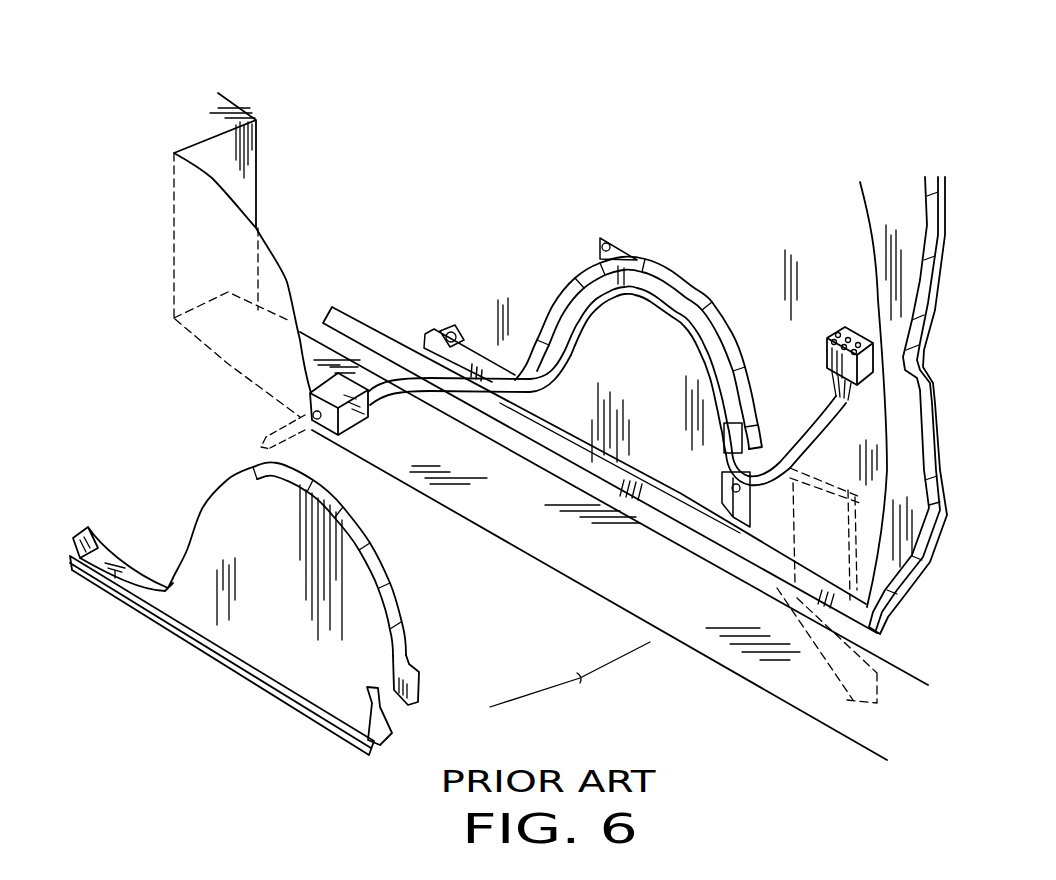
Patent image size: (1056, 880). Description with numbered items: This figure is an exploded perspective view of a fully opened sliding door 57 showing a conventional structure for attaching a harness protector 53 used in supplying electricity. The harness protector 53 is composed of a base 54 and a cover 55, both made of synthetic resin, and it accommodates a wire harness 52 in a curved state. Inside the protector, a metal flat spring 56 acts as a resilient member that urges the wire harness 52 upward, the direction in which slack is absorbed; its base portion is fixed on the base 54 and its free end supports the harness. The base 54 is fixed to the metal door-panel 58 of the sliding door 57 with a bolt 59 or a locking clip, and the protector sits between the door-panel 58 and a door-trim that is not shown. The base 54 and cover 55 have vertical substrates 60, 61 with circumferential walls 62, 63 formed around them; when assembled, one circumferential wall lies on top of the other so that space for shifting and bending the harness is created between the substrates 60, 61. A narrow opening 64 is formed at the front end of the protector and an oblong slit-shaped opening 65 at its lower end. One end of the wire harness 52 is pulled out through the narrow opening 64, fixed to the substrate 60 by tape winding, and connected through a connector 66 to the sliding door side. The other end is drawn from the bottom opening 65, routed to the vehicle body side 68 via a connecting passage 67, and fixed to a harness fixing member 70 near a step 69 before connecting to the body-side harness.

The wire harness 52 is at (597, 303).
The harness protector 53 is at (570, 679).
The base 54 is at (686, 460).
The cover 55 is at (412, 627).
The flat spring 56 is at (693, 330).
The sliding door 57 is at (957, 246).
The door-panel 58 is at (776, 205).
The bolt 59 is at (598, 245).
The vertical substrate 60 is at (636, 398).
The vertical substrate 61 is at (253, 655).
The circumferential wall 62 is at (698, 300).
The circumferential wall 63 is at (385, 530).
The narrow opening 64 is at (778, 482).
The opening 65 is at (703, 487).
The connector 66 is at (878, 376).
The connecting passage 67 is at (355, 348).
The vehicle body side 68 is at (258, 205).
The step 69 is at (443, 455).
The harness fixing member 70 is at (341, 400).